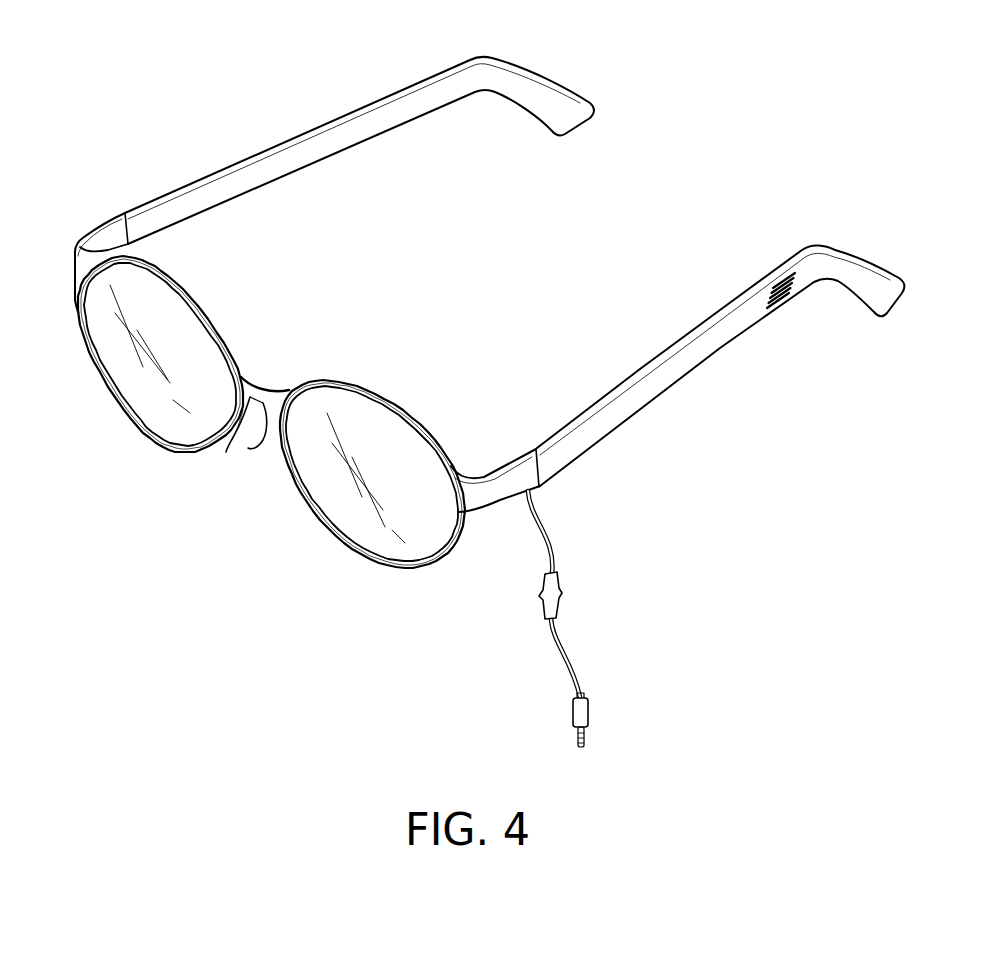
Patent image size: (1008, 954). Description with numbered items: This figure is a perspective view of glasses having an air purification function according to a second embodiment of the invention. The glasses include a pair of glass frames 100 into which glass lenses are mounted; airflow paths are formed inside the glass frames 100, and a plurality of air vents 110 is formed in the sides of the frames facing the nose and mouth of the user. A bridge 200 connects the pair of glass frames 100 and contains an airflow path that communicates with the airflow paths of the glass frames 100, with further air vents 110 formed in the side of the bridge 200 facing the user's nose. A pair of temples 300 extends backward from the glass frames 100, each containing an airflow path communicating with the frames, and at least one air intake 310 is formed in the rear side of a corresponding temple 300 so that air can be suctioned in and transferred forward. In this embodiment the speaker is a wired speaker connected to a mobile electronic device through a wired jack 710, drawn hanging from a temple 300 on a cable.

The glass frames 100 is at (110, 390).
The air vents 110 is at (256, 420).
The bridge 200 is at (255, 385).
The temples 300 is at (358, 108).
The air intake 310 is at (791, 297).
The wired jack 710 is at (588, 710).